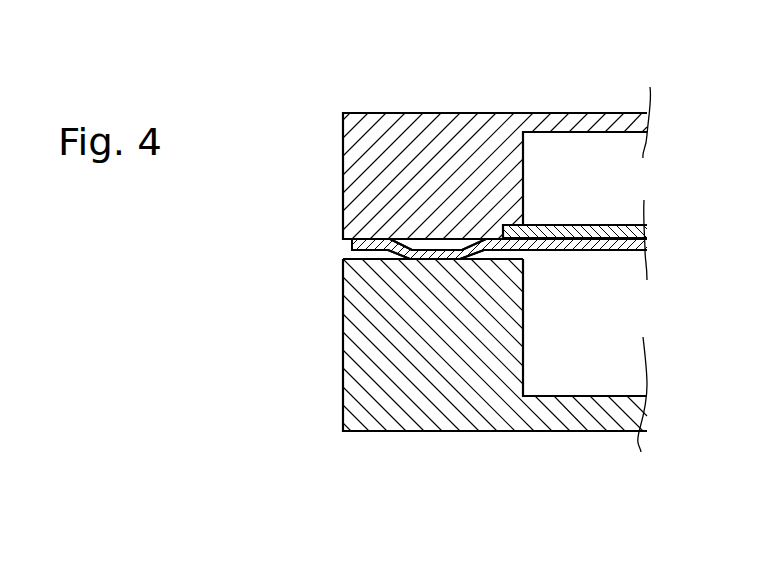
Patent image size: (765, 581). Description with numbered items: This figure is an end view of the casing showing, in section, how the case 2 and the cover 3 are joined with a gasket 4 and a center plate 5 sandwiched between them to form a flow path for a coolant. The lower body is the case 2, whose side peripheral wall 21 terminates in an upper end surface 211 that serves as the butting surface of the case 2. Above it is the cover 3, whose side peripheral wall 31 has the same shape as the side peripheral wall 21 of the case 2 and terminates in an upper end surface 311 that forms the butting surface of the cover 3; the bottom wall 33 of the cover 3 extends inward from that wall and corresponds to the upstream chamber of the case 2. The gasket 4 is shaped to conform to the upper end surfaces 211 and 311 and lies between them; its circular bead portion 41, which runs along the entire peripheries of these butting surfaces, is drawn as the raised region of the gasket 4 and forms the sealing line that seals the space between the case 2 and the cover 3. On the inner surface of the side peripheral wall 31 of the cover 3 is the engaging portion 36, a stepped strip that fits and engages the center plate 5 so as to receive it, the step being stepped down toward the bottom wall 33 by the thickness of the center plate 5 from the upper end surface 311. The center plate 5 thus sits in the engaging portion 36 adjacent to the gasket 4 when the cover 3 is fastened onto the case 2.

The case 2 is at (449, 389).
The side peripheral wall 21 is at (449, 343).
The upper end surface 211 is at (345, 259).
The cover 3 is at (449, 130).
The side peripheral wall 31 is at (449, 180).
The upper end surface 311 is at (353, 240).
The bottom wall 33 is at (578, 113).
The engaging portion 36 is at (527, 224).
The gasket 4 is at (541, 262).
The circular bead portion 41 is at (432, 256).
The center plate 5 is at (541, 234).